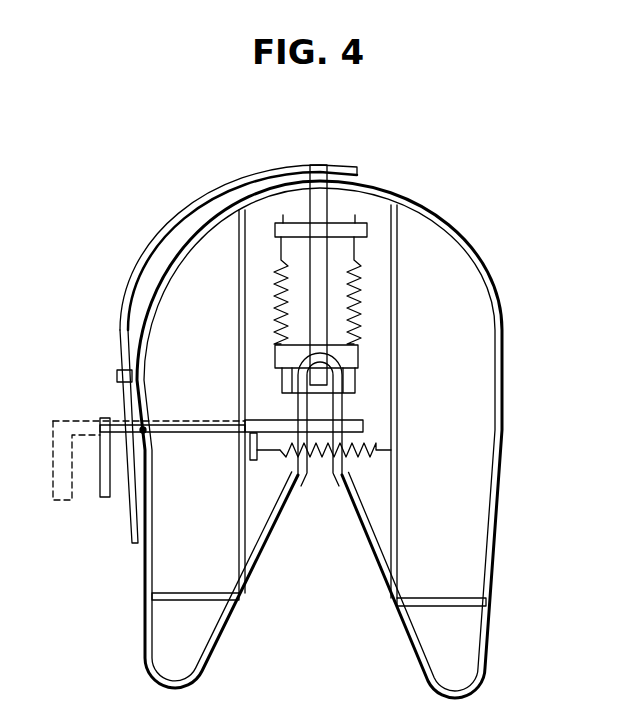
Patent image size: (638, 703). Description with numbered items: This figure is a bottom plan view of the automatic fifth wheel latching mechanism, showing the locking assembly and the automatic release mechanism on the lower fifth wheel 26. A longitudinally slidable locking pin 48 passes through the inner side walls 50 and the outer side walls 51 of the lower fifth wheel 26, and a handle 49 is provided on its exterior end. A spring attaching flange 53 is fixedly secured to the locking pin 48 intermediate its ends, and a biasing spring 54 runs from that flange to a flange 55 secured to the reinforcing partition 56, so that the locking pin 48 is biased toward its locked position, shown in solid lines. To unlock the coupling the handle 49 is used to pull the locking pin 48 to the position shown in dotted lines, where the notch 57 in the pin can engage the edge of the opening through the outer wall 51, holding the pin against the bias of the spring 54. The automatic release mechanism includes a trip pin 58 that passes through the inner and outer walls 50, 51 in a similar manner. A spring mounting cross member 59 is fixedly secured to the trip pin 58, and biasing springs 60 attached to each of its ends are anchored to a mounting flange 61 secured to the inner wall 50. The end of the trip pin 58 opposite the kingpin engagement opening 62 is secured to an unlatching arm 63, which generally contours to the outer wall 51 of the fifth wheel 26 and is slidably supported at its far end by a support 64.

The lower fifth wheel 26 is at (470, 322).
The locking pin 48 is at (157, 423).
The handle 49 is at (75, 480).
The inner side walls 50 is at (340, 480).
The outer side walls 51 is at (503, 430).
The spring attaching flange 53 is at (250, 455).
The biasing spring 54 is at (364, 430).
The flange 55 is at (391, 452).
The reinforcing partition 56 is at (398, 385).
The notch 57 is at (144, 434).
The trip pin 58 is at (323, 300).
The spring mounting cross member 59 is at (350, 226).
The biasing springs 60 is at (358, 344).
The mounting flange 61 is at (357, 393).
The kingpin engagement opening 62 is at (240, 306).
The unlatching arm 63 is at (218, 196).
The support 64 is at (117, 376).